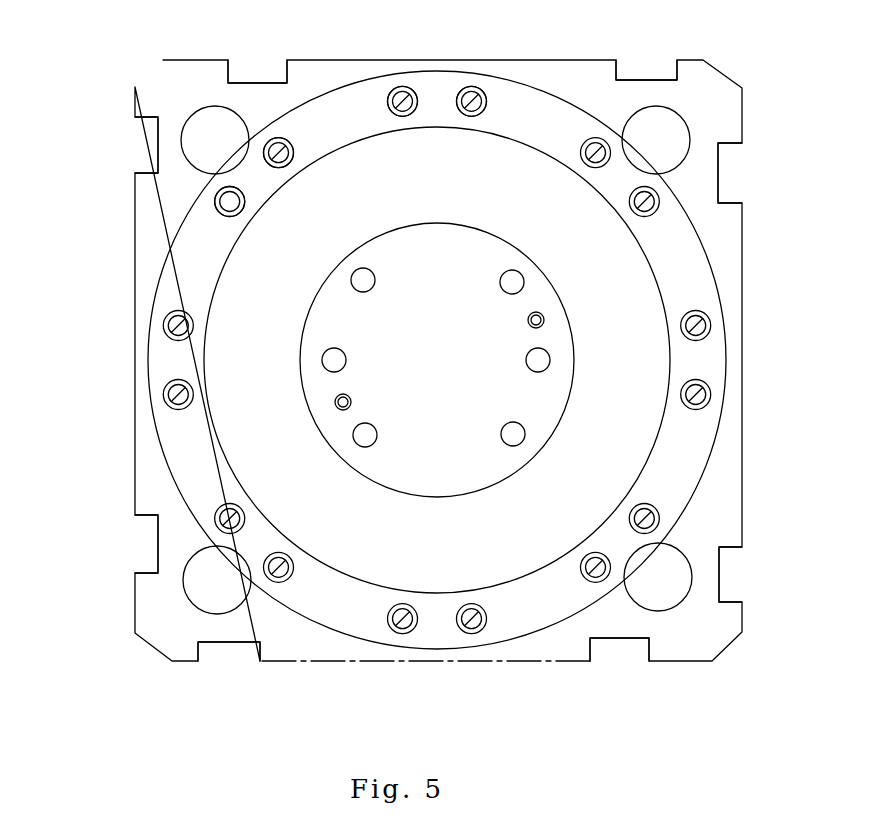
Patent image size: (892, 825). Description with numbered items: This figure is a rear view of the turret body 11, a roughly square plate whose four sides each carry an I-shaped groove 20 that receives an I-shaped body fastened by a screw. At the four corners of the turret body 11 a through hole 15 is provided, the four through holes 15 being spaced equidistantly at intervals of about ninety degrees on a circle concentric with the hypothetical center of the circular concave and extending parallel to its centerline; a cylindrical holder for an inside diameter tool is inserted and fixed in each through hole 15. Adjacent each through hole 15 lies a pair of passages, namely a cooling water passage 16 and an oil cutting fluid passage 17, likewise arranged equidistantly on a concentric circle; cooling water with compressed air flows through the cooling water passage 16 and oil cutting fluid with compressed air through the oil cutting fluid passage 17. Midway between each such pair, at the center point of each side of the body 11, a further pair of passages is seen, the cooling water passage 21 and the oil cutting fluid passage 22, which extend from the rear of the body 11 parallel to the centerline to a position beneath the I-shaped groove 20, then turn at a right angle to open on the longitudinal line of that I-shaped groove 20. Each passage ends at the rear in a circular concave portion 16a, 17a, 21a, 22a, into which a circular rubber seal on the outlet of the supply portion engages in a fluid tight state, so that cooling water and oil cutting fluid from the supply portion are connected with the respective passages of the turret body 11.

The turret body 11 is at (725, 127).
The through hole 15 is at (195, 160).
The cooling water passage 16 is at (590, 168).
The circular concave portion 16a is at (230, 216).
The oil cutting fluid passage 17 is at (646, 211).
The circular concave portion 17a is at (293, 157).
The I-shaped groove 20 is at (645, 80).
The cooling water passage 21 is at (395, 113).
The circular concave portion 21a is at (416, 93).
The oil cutting fluid passage 22 is at (468, 113).
The circular concave portion 22a is at (486, 93).